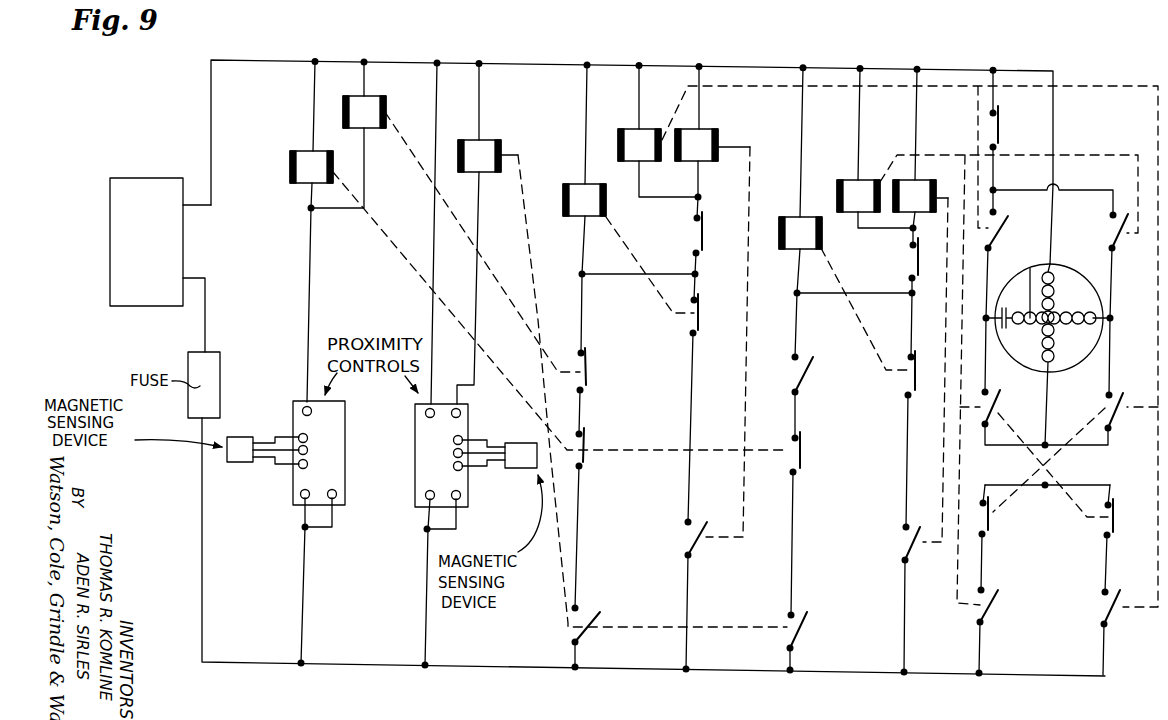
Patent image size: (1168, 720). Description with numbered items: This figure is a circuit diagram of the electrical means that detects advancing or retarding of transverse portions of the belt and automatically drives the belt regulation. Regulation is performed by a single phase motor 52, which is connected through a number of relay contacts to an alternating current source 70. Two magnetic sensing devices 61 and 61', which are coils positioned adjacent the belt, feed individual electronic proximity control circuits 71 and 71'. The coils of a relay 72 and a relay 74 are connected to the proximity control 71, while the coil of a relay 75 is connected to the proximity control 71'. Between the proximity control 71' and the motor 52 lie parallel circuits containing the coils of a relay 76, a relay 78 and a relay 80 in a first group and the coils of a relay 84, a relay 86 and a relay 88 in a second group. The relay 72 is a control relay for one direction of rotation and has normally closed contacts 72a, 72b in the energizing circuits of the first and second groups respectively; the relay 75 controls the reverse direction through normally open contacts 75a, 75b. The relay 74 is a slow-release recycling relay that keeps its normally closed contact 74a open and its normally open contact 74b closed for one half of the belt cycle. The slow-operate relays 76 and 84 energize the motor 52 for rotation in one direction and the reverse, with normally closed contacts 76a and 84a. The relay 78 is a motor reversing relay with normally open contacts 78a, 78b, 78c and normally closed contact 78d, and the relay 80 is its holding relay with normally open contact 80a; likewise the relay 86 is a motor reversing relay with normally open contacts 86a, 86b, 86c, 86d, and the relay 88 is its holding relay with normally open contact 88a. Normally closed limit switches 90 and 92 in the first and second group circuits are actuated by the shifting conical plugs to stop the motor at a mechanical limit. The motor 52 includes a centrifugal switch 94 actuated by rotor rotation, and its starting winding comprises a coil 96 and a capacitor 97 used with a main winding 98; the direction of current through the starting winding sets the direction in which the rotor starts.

The alternating current source 70 is at (145, 192).
The relay 72 is at (307, 162).
The relay 74 is at (372, 110).
The relay 75 is at (485, 157).
The relay 76 is at (581, 200).
The relay 78 is at (643, 145).
The relay 80 is at (703, 145).
The relay 84 is at (798, 230).
The relay 86 is at (852, 195).
The relay 88 is at (922, 198).
The limit switch 90 is at (703, 235).
The limit switch 92 is at (913, 258).
The centrifugal switch 94 is at (1000, 128).
The coil 96 is at (1030, 270).
The capacitor 97 is at (1009, 327).
The main winding 98 is at (1055, 276).
The motor 52 is at (1082, 301).
The magnetic sensing device 61 is at (263, 467).
The magnetic sensing device 61' is at (499, 476).
The proximity control circuit 71 is at (336, 534).
The proximity control circuit 71' is at (420, 364).
The normally closed contact 74a is at (590, 368).
The normally closed contact 72a is at (587, 442).
The normally open contact 75a is at (590, 618).
The normally open contact 80a is at (702, 542).
The normally closed contact 76a is at (701, 312).
The normally open contact 74b is at (812, 365).
The normally closed contact 72b is at (802, 463).
The normally open contact 75b is at (808, 618).
The normally closed contact 84a is at (887, 410).
The normally open contact 88a is at (912, 545).
The normally open contact 78a is at (1004, 228).
The normally open contact 78b is at (1118, 418).
The normally open contact 78c is at (1100, 612).
The normally closed contact 78d is at (992, 527).
The normally open contact 86a is at (1113, 238).
The normally open contact 86b is at (993, 616).
The normally open contact 86c is at (1105, 523).
The normally open contact 86d is at (998, 405).